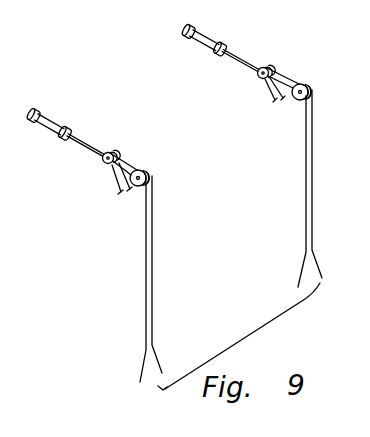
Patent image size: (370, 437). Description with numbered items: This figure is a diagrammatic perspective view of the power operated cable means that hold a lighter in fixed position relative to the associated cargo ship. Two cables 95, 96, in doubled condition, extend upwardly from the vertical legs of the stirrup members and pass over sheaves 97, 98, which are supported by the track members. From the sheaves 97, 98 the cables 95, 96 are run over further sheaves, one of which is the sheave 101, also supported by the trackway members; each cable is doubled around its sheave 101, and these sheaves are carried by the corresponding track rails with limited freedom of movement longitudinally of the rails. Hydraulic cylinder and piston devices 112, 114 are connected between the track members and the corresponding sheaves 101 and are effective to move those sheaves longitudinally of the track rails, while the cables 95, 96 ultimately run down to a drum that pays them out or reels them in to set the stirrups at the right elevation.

The cable 95 is at (146, 265).
The cable 96 is at (305, 200).
The sheave 97 is at (137, 187).
The sheave 98 is at (300, 101).
The sheave 101 is at (102, 163).
The hydraulic cylinder and piston device 112 is at (52, 116).
The hydraulic cylinder and piston device 114 is at (205, 36).